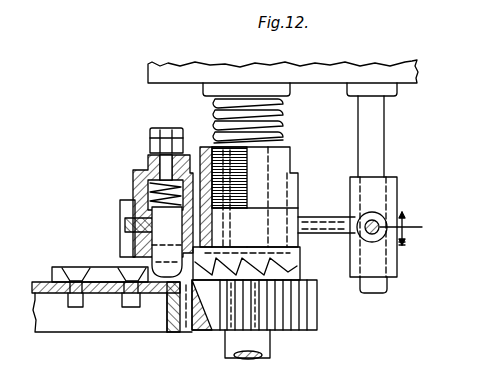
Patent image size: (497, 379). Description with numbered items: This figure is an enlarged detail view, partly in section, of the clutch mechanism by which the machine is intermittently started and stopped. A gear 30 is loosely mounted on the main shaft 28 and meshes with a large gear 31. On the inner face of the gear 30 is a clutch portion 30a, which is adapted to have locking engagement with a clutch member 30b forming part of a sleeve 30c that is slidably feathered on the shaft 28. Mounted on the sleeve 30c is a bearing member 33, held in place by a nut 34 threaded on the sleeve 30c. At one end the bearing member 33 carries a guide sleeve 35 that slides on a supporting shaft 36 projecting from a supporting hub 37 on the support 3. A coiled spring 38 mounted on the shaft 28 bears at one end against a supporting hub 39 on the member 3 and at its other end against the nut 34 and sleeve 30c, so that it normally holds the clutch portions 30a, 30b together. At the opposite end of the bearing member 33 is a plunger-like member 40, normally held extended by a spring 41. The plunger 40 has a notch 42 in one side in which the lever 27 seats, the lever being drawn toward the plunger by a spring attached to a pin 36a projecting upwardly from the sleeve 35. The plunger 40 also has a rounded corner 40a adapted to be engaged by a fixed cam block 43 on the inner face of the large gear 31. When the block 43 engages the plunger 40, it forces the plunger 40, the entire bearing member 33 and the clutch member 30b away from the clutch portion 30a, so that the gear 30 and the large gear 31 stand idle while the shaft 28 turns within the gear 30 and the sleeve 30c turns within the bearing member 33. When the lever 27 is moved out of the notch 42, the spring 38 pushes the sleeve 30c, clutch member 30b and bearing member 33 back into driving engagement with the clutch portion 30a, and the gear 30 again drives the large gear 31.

The supporting bearing member 3 is at (345, 74).
The supporting hub 39 is at (278, 89).
The coiled spring 38 is at (283, 118).
The supporting hub 37 is at (397, 90).
The supporting shaft 36 is at (369, 151).
The pin 36a is at (416, 228).
The nut 34 is at (258, 192).
The bearing member 33 is at (310, 228).
The guide sleeve 35 is at (376, 209).
The sleeve 30c is at (235, 233).
The clutch member 30b is at (295, 259).
The clutch portion 30a is at (290, 277).
The gear 30 is at (284, 298).
The main shaft 28 is at (255, 341).
The large gear 31 is at (90, 314).
The fixed cam block 43 is at (100, 276).
The lever 27 is at (126, 231).
The spring 41 is at (135, 188).
The notch 42 is at (169, 223).
The plunger-like member 40 is at (167, 242).
The rounded corner 40a is at (158, 279).